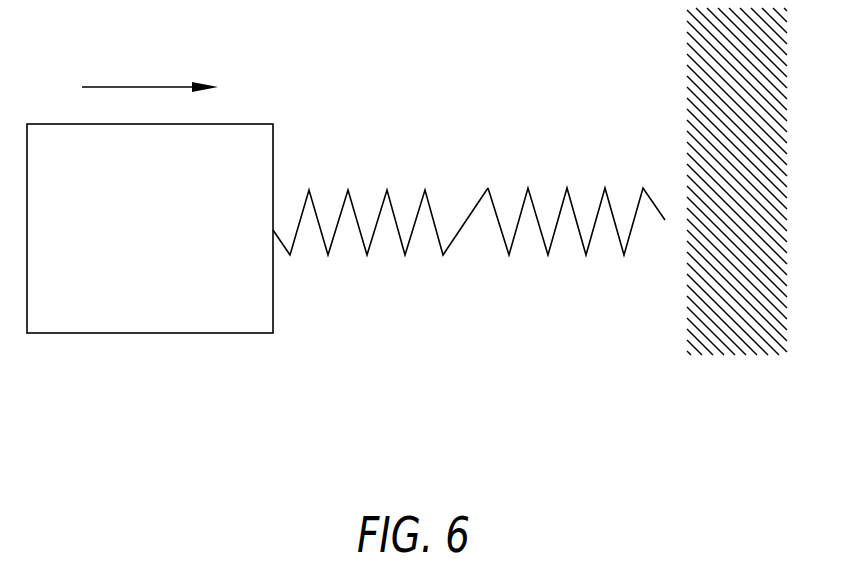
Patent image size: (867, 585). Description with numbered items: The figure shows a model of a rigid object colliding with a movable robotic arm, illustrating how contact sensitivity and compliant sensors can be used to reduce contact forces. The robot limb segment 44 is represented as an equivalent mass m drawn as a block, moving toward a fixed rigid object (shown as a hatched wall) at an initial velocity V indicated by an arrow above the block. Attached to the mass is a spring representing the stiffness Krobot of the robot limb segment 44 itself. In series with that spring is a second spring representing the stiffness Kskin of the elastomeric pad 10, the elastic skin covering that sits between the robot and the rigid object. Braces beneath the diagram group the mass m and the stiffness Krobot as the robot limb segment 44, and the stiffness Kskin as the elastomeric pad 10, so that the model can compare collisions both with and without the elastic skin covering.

The robot limb segment 44 is at (255, 248).
The elastomeric pad 10 is at (564, 285).
The equivalent mass m is at (150, 228).
The initial velocity V is at (150, 75).
The stiffness Krobot is at (380, 194).
The stiffness Kskin is at (576, 193).